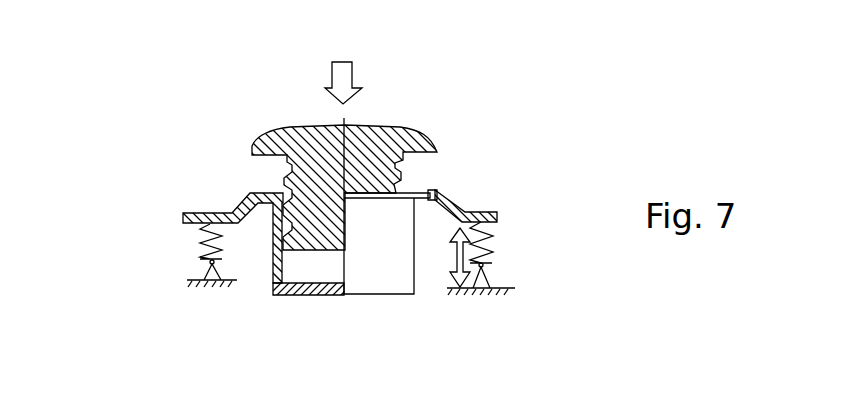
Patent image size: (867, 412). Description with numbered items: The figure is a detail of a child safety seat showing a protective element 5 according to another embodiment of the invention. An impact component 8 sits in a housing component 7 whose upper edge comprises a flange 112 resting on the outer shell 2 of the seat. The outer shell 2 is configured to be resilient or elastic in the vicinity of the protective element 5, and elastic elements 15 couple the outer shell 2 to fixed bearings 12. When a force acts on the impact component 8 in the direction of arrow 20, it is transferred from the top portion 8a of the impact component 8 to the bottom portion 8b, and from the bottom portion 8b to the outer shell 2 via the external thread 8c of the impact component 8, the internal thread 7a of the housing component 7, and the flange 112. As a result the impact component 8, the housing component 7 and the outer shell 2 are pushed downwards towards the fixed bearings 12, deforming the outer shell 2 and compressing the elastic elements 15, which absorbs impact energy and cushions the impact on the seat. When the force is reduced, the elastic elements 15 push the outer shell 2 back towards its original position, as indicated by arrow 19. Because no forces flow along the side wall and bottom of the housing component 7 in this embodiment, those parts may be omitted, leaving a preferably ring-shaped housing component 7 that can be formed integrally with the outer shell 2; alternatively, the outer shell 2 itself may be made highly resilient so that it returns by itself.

The protective element 5 is at (172, 119).
The arrow 20 is at (340, 72).
The impact component 8 is at (292, 132).
The top portion of the impact component 8a is at (368, 140).
The bottom portion of the impact component 8b is at (372, 172).
The external thread 8c is at (408, 168).
The housing component 7 is at (270, 275).
The internal thread 7a is at (270, 192).
The outer shell 2 is at (187, 226).
The elastic elements 15 is at (200, 244).
The fixed bearings 12 is at (205, 283).
The flange 112 is at (428, 190).
The arrow 19 is at (457, 257).